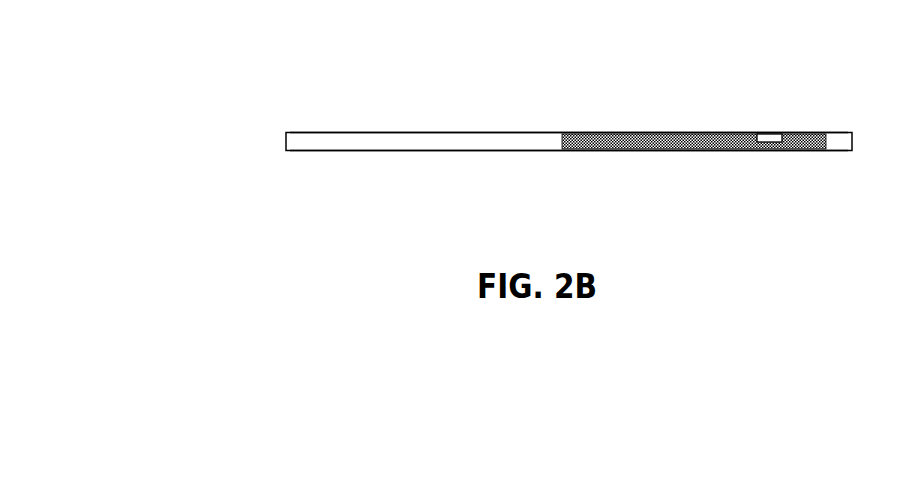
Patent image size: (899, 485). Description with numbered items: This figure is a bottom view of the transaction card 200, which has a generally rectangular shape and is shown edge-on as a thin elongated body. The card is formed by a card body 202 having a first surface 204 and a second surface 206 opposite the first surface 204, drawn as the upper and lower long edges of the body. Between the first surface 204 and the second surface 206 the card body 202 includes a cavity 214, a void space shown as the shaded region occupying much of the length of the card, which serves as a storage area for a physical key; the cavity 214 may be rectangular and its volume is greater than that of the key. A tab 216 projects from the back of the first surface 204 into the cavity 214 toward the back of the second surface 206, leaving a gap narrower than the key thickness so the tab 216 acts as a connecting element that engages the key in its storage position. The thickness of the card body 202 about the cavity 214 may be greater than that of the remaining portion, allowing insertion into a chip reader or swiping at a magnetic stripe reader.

The transaction card 200 is at (256, 76).
The card body 202 is at (293, 144).
The first surface 204 is at (407, 132).
The second surface 206 is at (372, 152).
The cavity 214 is at (613, 135).
The tab 216 is at (767, 134).